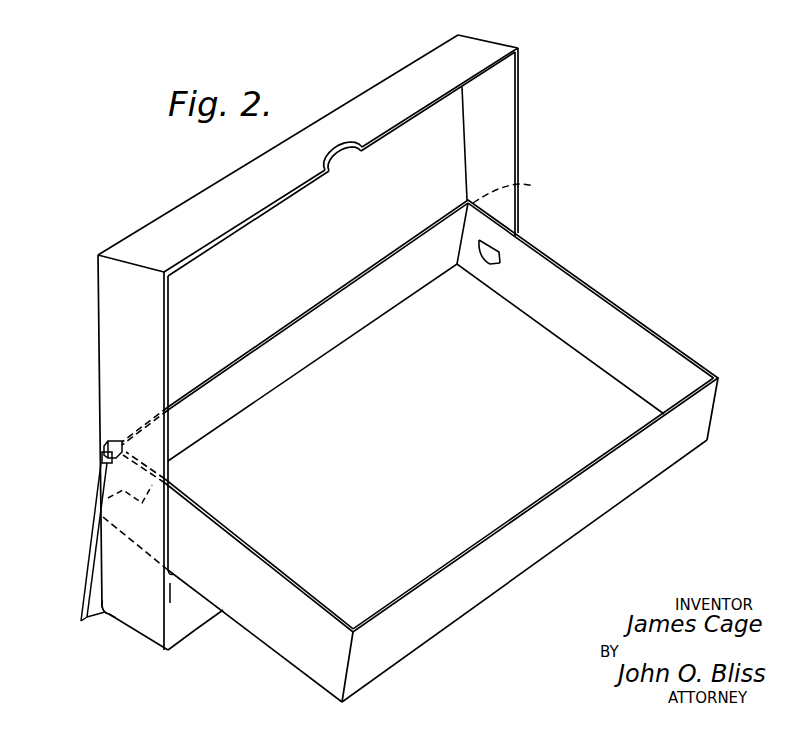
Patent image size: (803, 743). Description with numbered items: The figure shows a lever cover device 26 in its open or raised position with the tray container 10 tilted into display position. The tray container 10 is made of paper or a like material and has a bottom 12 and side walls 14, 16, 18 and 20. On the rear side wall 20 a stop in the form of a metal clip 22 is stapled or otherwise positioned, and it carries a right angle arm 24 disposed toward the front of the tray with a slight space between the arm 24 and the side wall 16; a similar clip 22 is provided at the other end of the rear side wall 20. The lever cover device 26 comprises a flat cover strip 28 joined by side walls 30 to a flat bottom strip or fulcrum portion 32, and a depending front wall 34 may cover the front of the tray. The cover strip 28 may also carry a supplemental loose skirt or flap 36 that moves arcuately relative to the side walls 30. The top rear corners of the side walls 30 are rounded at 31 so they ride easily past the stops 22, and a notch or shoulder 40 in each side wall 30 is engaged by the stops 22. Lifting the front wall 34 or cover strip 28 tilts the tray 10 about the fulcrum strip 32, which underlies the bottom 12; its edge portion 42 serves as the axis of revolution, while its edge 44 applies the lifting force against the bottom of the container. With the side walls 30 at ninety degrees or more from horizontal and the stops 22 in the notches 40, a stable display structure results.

The tray container 10 is at (610, 294).
The bottom 12 is at (416, 332).
The side wall 14 is at (557, 261).
The side wall 16 is at (233, 549).
The side wall 18 is at (522, 510).
The rear side wall 20 is at (318, 314).
The metal clip 22 is at (102, 457).
The right angle arm 24 is at (533, 187).
The lever cover device 26 is at (188, 195).
The cover strip 28 is at (427, 143).
The side walls 30 is at (503, 99).
The rounded corner 31 is at (112, 623).
The fulcrum portion 32 is at (190, 625).
The front wall 34 is at (418, 73).
The supplemental flap 36 is at (88, 551).
The notch 40 is at (104, 443).
The edge portion 42 is at (185, 642).
The edge 44 is at (170, 575).